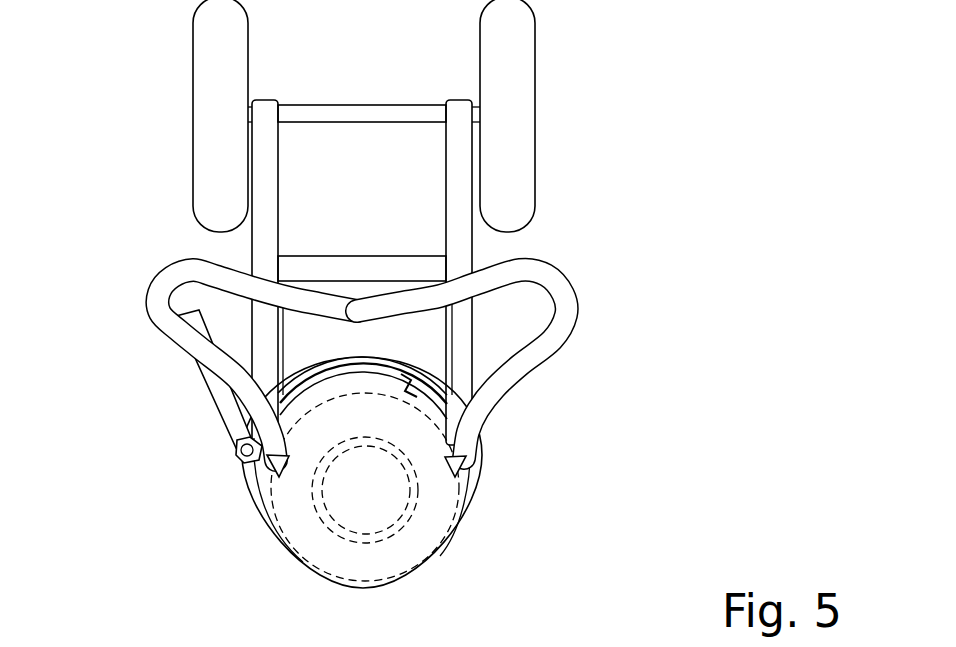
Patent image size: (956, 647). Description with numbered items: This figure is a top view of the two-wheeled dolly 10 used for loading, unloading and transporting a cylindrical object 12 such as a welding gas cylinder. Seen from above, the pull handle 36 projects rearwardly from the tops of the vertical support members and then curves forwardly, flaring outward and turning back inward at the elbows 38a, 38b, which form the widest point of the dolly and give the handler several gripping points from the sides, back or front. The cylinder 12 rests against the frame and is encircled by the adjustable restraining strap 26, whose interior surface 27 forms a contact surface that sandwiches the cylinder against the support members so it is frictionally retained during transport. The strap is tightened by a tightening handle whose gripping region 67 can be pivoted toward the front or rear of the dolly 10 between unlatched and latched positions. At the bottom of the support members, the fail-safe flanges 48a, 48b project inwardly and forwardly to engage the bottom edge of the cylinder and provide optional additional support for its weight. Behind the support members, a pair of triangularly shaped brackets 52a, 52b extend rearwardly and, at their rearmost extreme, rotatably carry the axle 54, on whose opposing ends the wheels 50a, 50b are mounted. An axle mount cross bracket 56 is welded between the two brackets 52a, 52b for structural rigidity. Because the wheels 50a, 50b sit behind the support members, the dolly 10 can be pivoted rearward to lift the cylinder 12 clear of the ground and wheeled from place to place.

The dolly 10 is at (387, 294).
The cylindrical object 12 is at (343, 567).
The restraining strap 26 is at (262, 512).
The interior surface 27 is at (457, 538).
The pull handle 36 is at (370, 328).
The elbow 38a is at (148, 296).
The elbow 38b is at (580, 304).
The fail-safe flange 48a is at (237, 462).
The fail-safe flange 48b is at (472, 462).
The wheel 50a is at (193, 92).
The wheel 50b is at (535, 83).
The bracket 52a is at (252, 250).
The bracket 52b is at (473, 243).
The axle 54 is at (362, 105).
The axle mount cross bracket 56 is at (362, 256).
The gripping region 67 is at (212, 393).